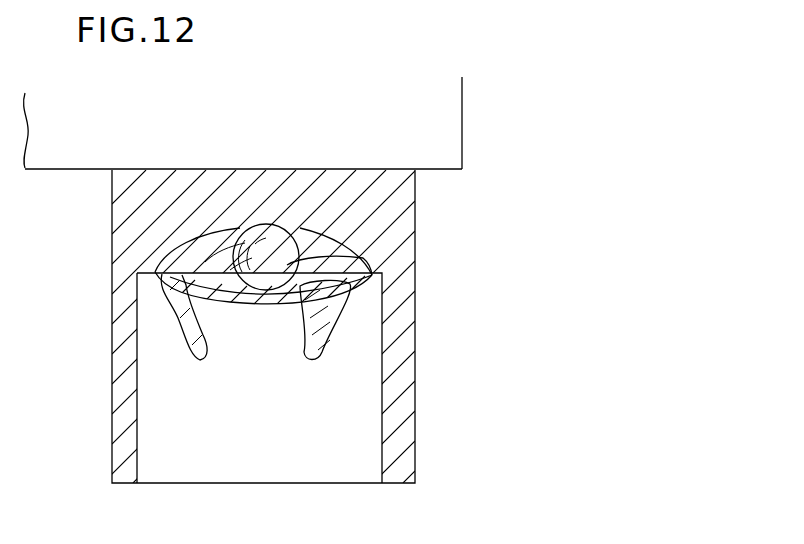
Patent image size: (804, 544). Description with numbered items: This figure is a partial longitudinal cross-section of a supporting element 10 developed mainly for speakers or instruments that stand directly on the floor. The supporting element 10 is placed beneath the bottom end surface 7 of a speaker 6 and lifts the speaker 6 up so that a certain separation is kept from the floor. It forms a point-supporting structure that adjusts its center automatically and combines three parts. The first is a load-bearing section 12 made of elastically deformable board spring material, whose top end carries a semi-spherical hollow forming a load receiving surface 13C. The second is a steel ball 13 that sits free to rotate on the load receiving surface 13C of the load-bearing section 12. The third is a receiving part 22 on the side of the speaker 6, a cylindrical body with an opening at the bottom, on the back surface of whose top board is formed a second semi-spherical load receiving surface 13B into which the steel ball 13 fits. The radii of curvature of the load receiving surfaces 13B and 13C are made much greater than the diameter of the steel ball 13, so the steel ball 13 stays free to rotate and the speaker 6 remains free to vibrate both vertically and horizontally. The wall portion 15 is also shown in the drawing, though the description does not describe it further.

The bottom end surface 7 is at (210, 169).
The speaker 6 is at (443, 122).
The supporting element 10 is at (562, 291).
The load-bearing section 12 is at (345, 306).
The steel ball 13 is at (300, 228).
The load receiving surface 13B is at (316, 238).
The load receiving surface 13C is at (291, 300).
The right side wall 15 is at (393, 394).
The receiving part 22 is at (120, 421).